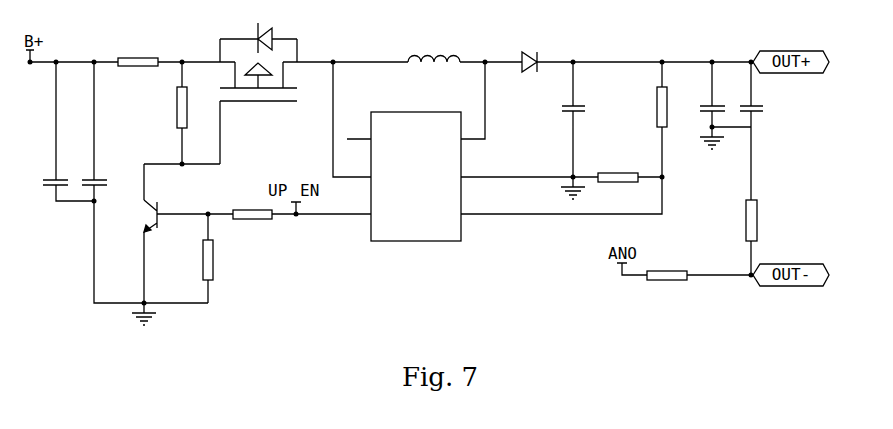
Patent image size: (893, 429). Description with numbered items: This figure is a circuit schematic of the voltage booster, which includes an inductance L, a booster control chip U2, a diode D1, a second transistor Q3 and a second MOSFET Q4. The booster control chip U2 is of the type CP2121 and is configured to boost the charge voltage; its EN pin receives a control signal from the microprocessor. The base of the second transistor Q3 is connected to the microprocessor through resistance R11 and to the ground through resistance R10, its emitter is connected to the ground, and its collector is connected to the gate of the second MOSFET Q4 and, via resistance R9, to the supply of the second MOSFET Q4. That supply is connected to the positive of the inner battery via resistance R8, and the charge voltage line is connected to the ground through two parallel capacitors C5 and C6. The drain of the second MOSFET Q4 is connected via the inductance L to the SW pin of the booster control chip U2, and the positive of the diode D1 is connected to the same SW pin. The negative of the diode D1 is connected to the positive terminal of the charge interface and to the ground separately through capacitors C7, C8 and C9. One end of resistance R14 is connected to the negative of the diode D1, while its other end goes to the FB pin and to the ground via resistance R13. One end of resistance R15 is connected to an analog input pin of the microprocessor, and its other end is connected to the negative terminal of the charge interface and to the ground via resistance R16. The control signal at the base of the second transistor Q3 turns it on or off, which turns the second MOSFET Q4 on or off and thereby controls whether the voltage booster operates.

The resistance R8 is at (138, 52).
The resistance R9 is at (169, 107).
The resistance R10 is at (226, 260).
The resistance R11 is at (252, 206).
The resistance R13 is at (618, 166).
The resistance R14 is at (644, 107).
The resistance R15 is at (667, 266).
The resistance R16 is at (769, 220).
The capacitor C5 is at (50, 173).
The capacitor C6 is at (99, 173).
The capacitor C7 is at (585, 110).
The capacitor C8 is at (717, 98).
The capacitor C9 is at (756, 98).
The inductance L is at (434, 46).
The diode D1 is at (524, 50).
The second transistor Q3 is at (162, 209).
The second MOSFET Q4 is at (246, 44).
The booster control chip U2 is at (414, 167).